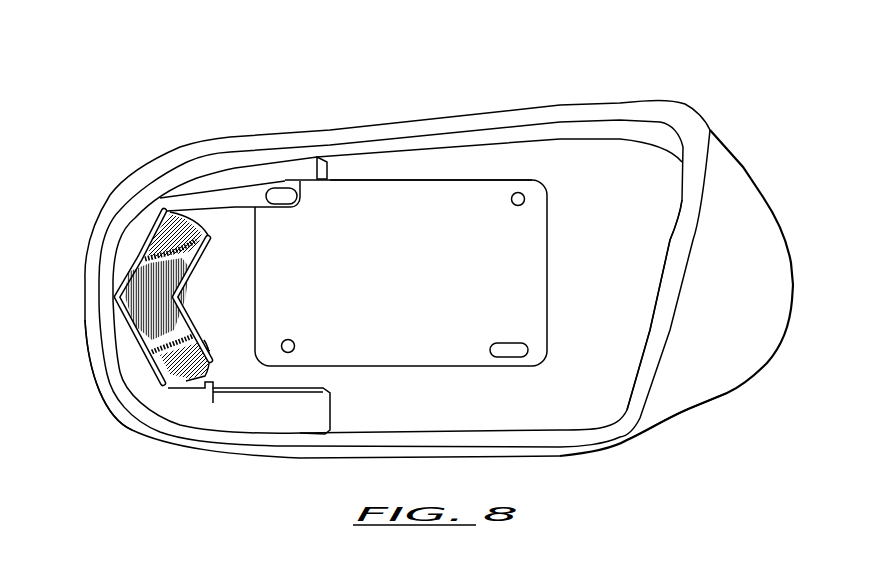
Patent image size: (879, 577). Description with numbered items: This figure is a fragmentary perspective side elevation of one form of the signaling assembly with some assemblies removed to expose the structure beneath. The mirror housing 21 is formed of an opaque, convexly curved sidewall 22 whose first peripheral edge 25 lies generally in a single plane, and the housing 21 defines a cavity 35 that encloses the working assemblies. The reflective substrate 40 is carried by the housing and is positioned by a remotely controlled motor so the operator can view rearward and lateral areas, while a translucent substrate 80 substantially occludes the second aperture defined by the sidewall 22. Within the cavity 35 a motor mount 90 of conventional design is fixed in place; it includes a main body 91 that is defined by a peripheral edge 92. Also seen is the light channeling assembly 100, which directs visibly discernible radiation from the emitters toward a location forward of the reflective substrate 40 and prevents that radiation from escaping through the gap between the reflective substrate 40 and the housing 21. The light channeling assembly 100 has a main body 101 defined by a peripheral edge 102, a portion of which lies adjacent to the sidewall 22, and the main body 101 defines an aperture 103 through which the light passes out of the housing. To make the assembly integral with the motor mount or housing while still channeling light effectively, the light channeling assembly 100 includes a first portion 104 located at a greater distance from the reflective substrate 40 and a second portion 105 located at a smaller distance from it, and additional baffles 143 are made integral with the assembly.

The housing 21 is at (686, 70).
The convexly curved sidewall 22 is at (744, 167).
The first peripheral edge 25 is at (103, 393).
The cavity 35 is at (613, 242).
The reflective substrate 40 is at (628, 290).
The translucent substrate 80 is at (160, 205).
The motor mount 90 is at (410, 222).
The main body 91 is at (415, 288).
The peripheral edge 92 is at (403, 180).
The light channeling assembly 100 is at (134, 330).
The main body 101 is at (238, 301).
The peripheral edge 102 is at (148, 266).
The aperture 103 is at (147, 322).
The first portion 104 is at (233, 220).
The second portion 105 is at (293, 412).
The baffles 143 is at (150, 233).